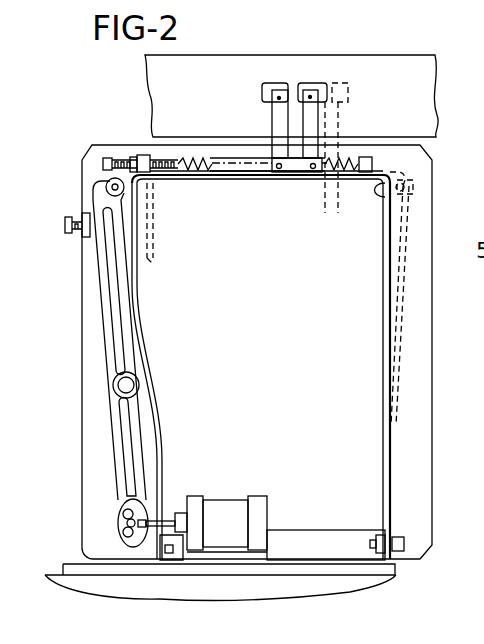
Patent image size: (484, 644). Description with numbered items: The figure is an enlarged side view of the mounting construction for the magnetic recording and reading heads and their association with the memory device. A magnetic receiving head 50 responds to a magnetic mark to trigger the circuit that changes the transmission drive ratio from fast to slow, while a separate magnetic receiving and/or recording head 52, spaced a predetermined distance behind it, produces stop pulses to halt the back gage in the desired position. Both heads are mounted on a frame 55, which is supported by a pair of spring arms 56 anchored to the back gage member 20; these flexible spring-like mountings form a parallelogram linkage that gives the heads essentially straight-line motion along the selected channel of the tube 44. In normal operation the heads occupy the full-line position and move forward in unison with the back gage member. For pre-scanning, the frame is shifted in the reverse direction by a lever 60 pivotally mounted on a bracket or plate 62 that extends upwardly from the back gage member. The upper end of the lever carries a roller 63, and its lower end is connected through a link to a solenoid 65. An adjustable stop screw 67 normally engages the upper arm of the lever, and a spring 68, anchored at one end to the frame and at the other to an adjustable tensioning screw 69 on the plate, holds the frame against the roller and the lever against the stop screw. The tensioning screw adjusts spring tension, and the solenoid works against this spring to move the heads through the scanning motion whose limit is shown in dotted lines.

The back gage member 20 is at (268, 588).
The tube 44 is at (378, 52).
The magnetic receiving head 50 is at (270, 84).
The magnetic receiving and/or recording head 52 is at (340, 84).
The frame 55 is at (290, 182).
The spring arms 56 is at (128, 268).
The lever 60 is at (115, 441).
The bracket or plate 62 is at (90, 350).
The roller 63 is at (110, 182).
The solenoid 65 is at (227, 508).
The adjustable stop screw 67 is at (67, 235).
The spring 68 is at (206, 158).
The adjustable tensioning screw 69 is at (118, 157).